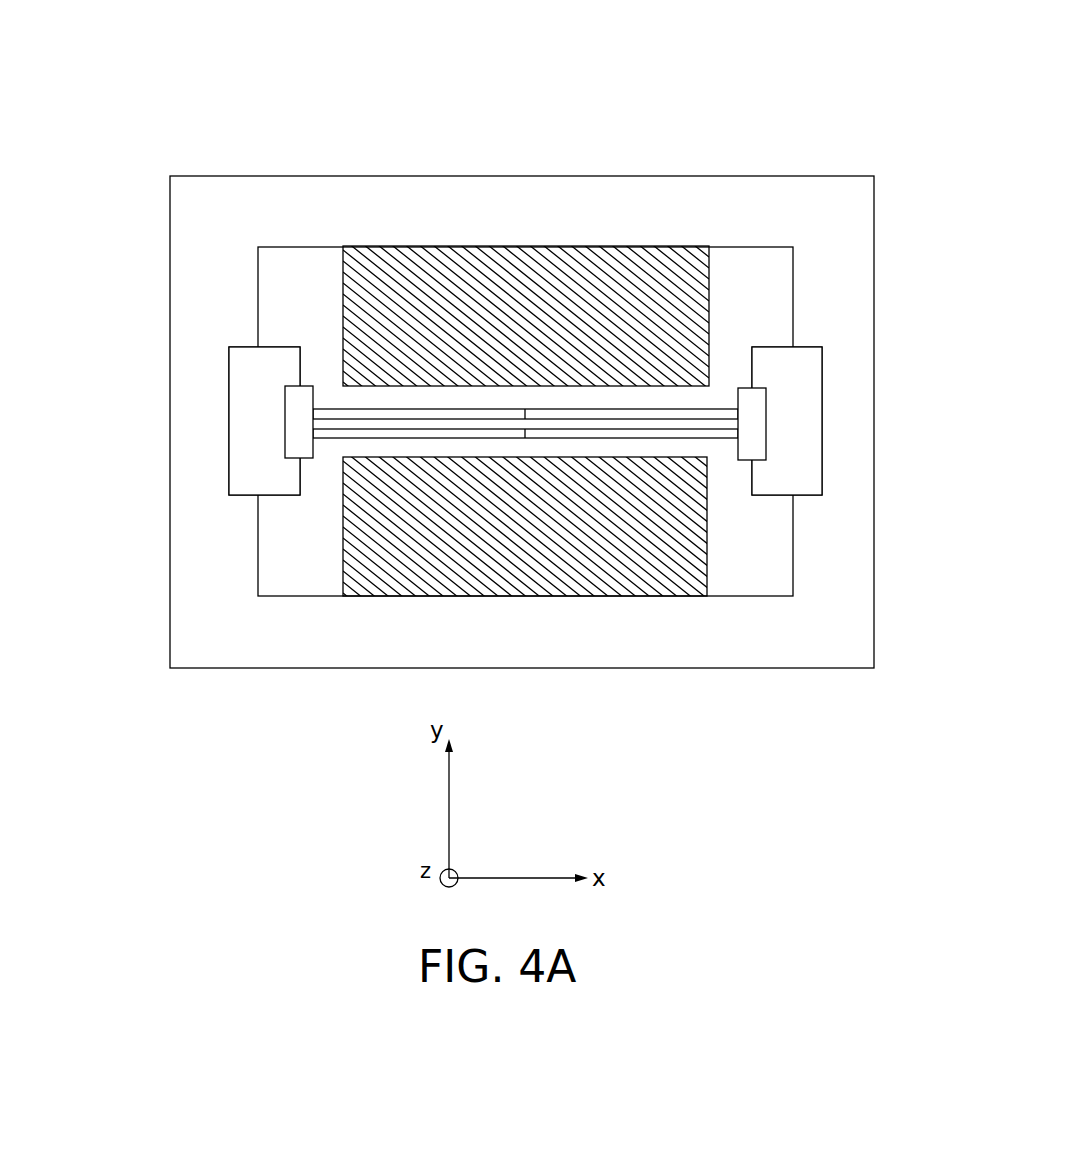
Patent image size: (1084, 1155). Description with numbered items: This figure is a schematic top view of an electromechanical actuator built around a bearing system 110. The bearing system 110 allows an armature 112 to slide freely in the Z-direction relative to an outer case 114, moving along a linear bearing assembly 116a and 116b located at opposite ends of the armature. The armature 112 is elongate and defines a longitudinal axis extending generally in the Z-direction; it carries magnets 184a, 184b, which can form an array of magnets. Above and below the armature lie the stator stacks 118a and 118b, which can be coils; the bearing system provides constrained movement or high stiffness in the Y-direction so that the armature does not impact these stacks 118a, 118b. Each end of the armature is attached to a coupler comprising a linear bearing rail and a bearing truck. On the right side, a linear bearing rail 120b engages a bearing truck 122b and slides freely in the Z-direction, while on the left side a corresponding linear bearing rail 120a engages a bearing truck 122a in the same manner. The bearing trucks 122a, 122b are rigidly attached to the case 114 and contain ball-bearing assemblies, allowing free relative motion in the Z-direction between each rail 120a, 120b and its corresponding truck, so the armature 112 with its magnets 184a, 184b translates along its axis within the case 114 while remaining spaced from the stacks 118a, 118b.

The bearing system 110 is at (534, 100).
The armature 112 is at (645, 425).
The outer case 114 is at (651, 193).
The linear bearing assembly 116a is at (240, 335).
The linear bearing assembly 116b is at (806, 326).
The stack 118a is at (442, 278).
The stack 118b is at (405, 587).
The linear bearing rail 120a is at (305, 400).
The linear bearing rail 120b is at (751, 454).
The bearing truck 122a is at (237, 435).
The bearing truck 122b is at (815, 362).
The magnet 184a is at (573, 412).
The magnet 184b is at (568, 432).